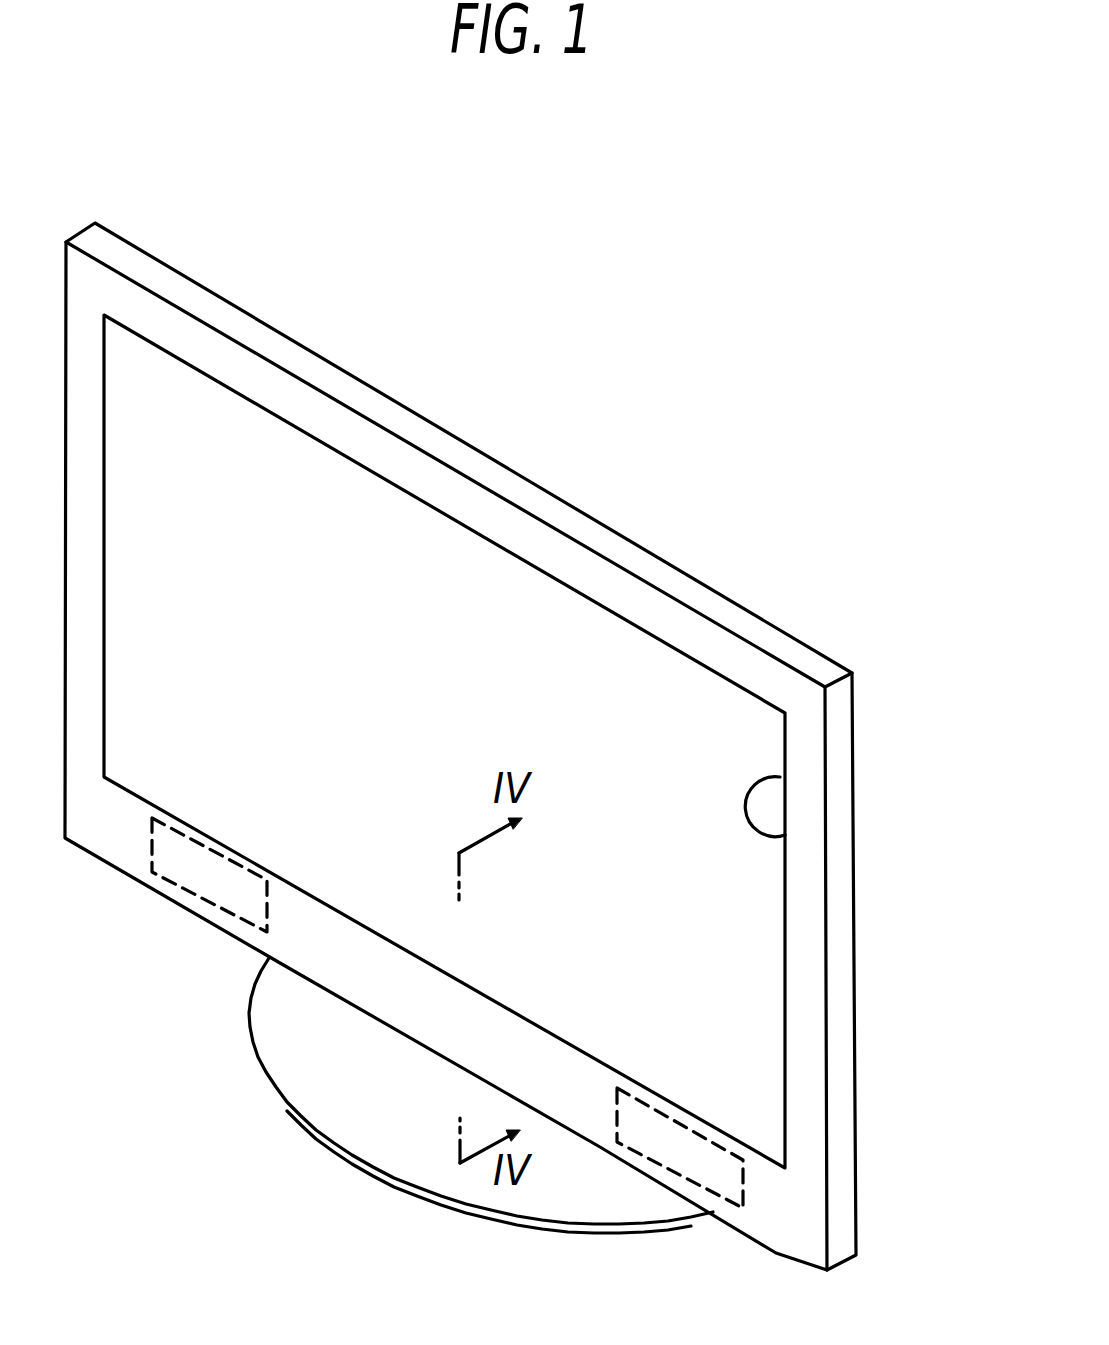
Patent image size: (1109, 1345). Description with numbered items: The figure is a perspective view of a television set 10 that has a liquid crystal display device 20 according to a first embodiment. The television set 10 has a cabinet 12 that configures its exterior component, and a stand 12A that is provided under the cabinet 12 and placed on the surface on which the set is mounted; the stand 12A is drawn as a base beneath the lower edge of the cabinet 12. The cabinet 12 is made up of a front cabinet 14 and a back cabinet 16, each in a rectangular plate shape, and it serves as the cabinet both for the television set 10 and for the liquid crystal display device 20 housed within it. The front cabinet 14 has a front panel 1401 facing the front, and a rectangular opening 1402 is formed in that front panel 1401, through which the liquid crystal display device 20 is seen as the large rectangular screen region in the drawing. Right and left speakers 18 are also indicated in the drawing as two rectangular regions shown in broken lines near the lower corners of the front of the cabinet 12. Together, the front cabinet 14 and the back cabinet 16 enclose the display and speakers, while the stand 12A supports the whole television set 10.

The television set 10 is at (746, 263).
The cabinet 12 is at (292, 347).
The stand 12A is at (402, 1131).
The front cabinet 14 is at (663, 617).
The back cabinet 16 is at (757, 618).
The speakers 18 is at (210, 880).
The liquid crystal display device 20 is at (440, 562).
The front panel 1401 is at (805, 937).
The rectangular opening 1402 is at (785, 836).